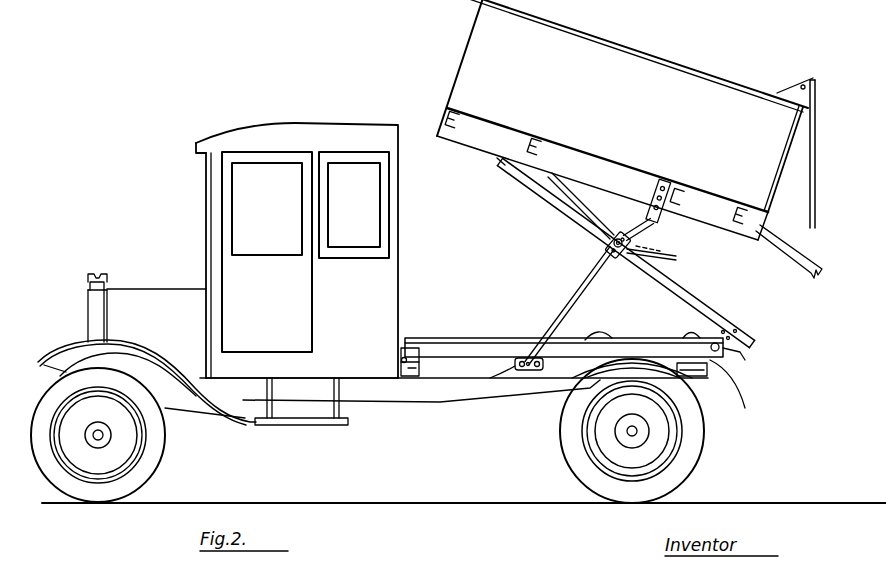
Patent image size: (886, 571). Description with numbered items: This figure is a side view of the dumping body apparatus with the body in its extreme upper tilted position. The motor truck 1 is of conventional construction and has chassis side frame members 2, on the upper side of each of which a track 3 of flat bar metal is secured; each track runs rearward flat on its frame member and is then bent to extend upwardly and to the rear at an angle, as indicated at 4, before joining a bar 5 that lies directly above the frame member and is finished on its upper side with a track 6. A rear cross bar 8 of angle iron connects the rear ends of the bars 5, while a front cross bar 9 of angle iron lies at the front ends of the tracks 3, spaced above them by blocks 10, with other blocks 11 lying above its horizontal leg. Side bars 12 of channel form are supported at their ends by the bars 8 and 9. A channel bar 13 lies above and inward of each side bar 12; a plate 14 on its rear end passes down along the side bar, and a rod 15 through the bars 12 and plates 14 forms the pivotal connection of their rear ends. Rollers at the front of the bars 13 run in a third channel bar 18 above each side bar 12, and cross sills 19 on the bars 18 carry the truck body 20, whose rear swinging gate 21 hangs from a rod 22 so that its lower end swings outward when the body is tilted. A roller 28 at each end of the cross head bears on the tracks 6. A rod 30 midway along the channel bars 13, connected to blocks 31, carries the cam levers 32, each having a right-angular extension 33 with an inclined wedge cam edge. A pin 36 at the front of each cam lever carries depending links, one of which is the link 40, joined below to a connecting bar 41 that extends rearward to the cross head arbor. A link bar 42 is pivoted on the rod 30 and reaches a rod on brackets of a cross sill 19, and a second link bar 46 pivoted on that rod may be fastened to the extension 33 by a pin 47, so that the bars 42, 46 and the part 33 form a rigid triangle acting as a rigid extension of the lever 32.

The motor truck 1 is at (262, 363).
The chassis side frame member 2 is at (438, 399).
The track 3 is at (465, 379).
The inclined track section 4 is at (527, 372).
The bar 5 is at (700, 377).
The track 6 is at (680, 366).
The rear cross bar 8 is at (731, 393).
The front cross bar 9 is at (400, 360).
The block 10 is at (410, 371).
The block 11 is at (412, 349).
The side bar 12 is at (455, 342).
The channel bar 13 is at (576, 214).
The plate 14 is at (742, 351).
The rod 15 is at (712, 360).
The third channel bar 18 is at (540, 176).
The cross sill 19 is at (535, 133).
The truck body 20 is at (637, 72).
The rear swinging gate 21 is at (810, 157).
The rod 22 is at (802, 85).
The roller 28 is at (688, 333).
The rod 30 is at (616, 258).
The block 31 is at (607, 245).
The cam lever 32 is at (580, 293).
The right-angular extension 33 is at (664, 258).
The pin 36 is at (515, 362).
The link 40 is at (528, 362).
The connecting bar 41 is at (590, 336).
The link bar 42 is at (633, 213).
The second link bar 46 is at (656, 230).
The pin 47 is at (658, 249).